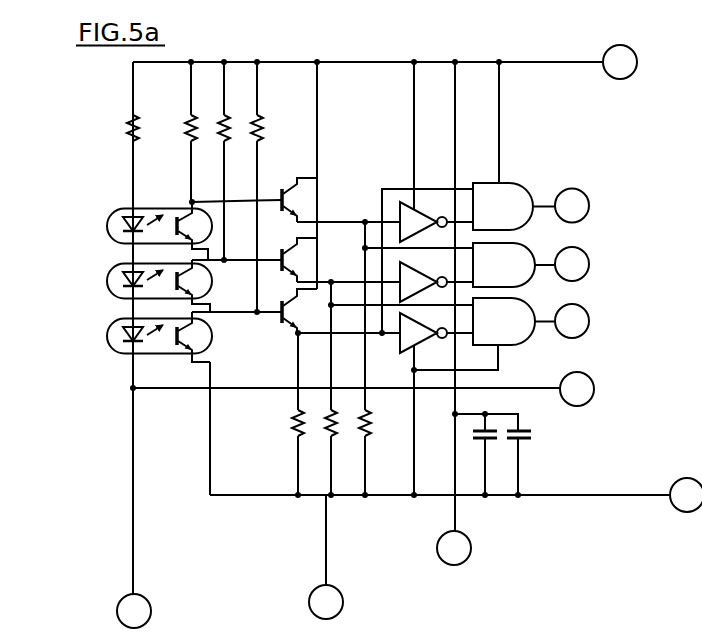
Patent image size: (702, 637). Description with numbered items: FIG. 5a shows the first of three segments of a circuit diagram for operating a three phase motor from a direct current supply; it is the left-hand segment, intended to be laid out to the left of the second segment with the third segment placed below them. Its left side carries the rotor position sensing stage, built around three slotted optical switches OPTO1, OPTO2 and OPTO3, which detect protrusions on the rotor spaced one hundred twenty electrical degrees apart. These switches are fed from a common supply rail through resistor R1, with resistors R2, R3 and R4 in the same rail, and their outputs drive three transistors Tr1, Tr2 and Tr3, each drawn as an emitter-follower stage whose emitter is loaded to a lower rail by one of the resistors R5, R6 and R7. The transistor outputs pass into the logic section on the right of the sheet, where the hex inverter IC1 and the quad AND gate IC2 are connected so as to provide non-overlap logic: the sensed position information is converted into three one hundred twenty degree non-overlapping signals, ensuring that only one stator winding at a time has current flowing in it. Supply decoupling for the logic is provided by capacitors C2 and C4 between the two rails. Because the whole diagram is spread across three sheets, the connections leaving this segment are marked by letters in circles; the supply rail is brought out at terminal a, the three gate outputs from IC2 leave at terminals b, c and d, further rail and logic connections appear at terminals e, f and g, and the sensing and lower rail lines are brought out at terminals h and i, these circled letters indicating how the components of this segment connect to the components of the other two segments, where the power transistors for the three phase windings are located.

The resistor R1 is at (115, 131).
The resistor R2 is at (173, 131).
The resistor R3 is at (211, 143).
The resistor R4 is at (275, 130).
The resistor R5 is at (281, 418).
The resistor R6 is at (344, 414).
The resistor R7 is at (382, 419).
The transistor Tr1 is at (290, 186).
The transistor Tr2 is at (289, 251).
The transistor Tr3 is at (289, 303).
The slotted optical switch OPTO1 is at (123, 231).
The slotted optical switch OPTO2 is at (123, 286).
The slotted optical switch OPTO3 is at (123, 337).
The hex inverter IC1 is at (429, 279).
The quad AND IC2 is at (506, 267).
The capacitor C2 is at (476, 463).
The capacitor C4 is at (528, 463).
The circled connection letter a is at (620, 62).
The circled connection letter b is at (572, 206).
The circled connection letter c is at (572, 264).
The circled connection letter d is at (572, 321).
The circled connection letter e is at (577, 389).
The circled connection letter f is at (686, 495).
The circled connection letter g is at (454, 313).
The circled connection letter h is at (326, 557).
The circled connection letter i is at (134, 611).